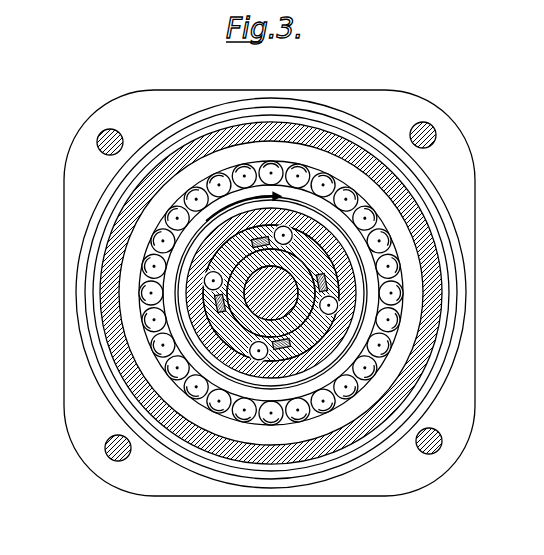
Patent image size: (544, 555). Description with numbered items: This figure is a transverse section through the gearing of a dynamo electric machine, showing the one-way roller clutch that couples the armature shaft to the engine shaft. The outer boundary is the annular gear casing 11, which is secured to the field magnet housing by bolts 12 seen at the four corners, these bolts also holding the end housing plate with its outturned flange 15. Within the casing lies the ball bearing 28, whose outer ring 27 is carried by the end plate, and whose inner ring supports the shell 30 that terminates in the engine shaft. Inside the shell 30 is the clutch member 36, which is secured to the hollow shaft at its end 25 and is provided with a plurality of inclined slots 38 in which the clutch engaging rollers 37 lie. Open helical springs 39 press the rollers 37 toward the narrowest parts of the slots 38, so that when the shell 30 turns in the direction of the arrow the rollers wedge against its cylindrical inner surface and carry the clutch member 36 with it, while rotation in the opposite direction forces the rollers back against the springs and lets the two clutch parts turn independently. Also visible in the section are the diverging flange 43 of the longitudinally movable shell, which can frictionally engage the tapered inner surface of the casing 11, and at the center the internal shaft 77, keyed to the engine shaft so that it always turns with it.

The gear casing 11 is at (212, 83).
The bolts 12 is at (103, 134).
The outturned flange 15 is at (373, 307).
The end of hollow shaft 25 is at (213, 321).
The outer ring of ball bearing 27 is at (350, 173).
The ball bearing 28 is at (322, 183).
The shell 30 is at (353, 292).
The clutch member 36 is at (347, 250).
The clutch engaging roller 37 is at (325, 222).
The inclined slots 38 is at (450, 360).
The open helical springs 39 is at (355, 275).
The diverging flange 43 is at (447, 348).
The internal shaft 77 is at (200, 306).